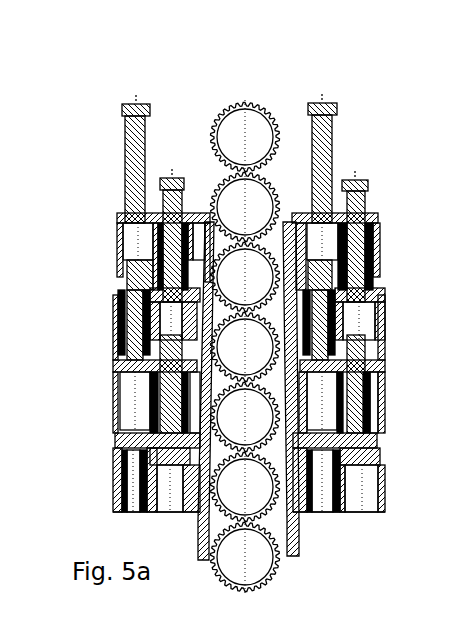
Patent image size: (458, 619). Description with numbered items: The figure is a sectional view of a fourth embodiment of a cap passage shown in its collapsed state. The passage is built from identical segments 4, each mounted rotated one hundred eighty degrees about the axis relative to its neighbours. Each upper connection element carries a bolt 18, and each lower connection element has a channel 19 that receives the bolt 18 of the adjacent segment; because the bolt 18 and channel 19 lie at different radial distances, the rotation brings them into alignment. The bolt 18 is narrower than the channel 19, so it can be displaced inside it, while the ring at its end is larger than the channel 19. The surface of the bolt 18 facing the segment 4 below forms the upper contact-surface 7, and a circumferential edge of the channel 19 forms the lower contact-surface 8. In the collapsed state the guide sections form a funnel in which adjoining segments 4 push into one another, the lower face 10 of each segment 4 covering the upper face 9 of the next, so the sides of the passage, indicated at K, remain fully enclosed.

The chain of gear rollers K is at (228, 110).
The segment 4 is at (118, 168).
The upper contact-surface 7 is at (368, 202).
The lower contact-surface 8 is at (373, 212).
The upper face 9 is at (347, 337).
The lower face 10 is at (122, 317).
The channel 19 is at (150, 377).
The bolt 18 is at (158, 407).